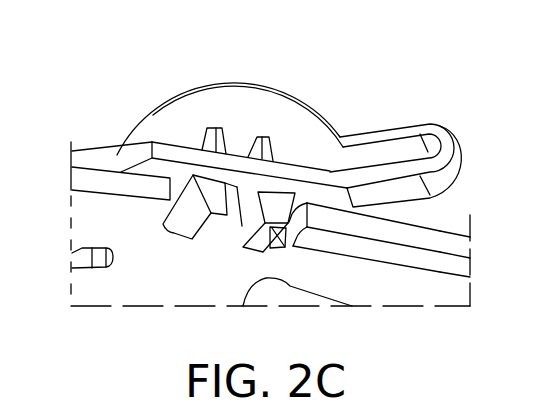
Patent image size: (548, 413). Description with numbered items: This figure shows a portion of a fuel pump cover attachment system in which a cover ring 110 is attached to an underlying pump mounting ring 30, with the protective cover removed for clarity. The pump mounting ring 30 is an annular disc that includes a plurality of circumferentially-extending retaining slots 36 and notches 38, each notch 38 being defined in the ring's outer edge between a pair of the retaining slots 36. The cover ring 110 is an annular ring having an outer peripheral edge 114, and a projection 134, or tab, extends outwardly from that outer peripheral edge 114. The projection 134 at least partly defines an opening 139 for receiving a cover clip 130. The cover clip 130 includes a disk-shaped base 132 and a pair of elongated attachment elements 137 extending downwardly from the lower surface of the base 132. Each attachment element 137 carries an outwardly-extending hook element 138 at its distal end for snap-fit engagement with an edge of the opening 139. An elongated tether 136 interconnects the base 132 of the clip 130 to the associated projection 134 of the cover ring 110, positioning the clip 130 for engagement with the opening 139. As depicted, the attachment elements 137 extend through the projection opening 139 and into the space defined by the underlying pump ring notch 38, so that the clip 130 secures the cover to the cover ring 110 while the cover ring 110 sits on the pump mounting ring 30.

The pump mounting ring 30 is at (430, 307).
The retaining slot 36 is at (70, 250).
The notch 38 is at (295, 246).
The cover ring 110 is at (452, 232).
The outer peripheral edge 114 is at (462, 247).
The cover clip 130 is at (295, 93).
The disk-shaped base 132 is at (237, 83).
The projection 134 is at (138, 155).
The tether 136 is at (400, 125).
The attachment element 137 is at (217, 138).
The hook element 138 is at (187, 213).
The opening 139 is at (265, 137).